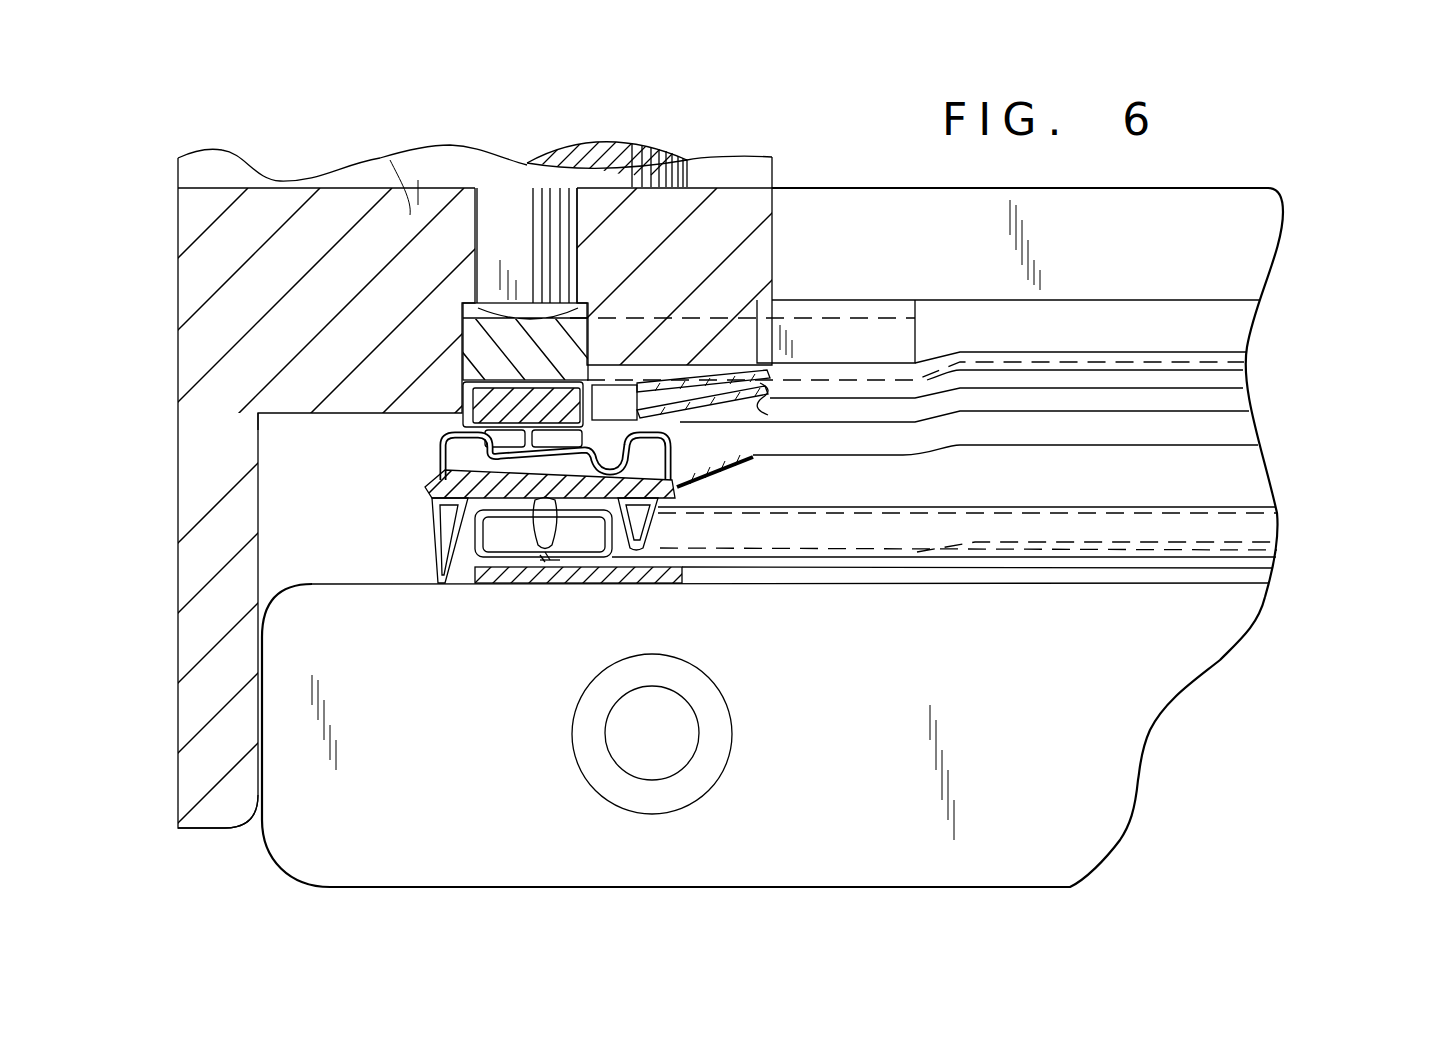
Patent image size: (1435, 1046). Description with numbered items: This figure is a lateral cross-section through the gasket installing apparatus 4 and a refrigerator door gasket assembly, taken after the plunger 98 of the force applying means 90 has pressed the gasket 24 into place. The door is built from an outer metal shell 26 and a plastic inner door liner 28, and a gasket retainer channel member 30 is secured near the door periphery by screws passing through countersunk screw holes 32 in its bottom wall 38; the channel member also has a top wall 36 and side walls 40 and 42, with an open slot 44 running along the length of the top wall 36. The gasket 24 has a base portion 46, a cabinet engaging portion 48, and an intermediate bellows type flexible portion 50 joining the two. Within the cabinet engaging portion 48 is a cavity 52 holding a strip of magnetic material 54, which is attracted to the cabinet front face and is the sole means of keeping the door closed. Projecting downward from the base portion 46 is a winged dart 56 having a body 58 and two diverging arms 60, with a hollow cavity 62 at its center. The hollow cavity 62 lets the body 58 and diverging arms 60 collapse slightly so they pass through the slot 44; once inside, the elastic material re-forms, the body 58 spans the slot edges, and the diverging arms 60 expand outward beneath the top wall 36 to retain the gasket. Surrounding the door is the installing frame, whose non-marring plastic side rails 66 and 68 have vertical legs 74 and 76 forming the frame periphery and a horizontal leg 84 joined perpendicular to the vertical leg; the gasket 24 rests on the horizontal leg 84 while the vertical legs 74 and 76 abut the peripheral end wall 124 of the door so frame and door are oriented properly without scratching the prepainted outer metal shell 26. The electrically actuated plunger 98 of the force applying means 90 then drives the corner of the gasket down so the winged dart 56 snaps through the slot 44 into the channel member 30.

The connector assembly 4 is at (135, 236).
The gasket 24 is at (716, 492).
The outer metal shell 26 is at (312, 866).
The inner door or liner 28 is at (693, 572).
The gasket retainer channel member 30 is at (605, 572).
The screw holes 32 is at (545, 598).
The top wall 36 is at (672, 572).
The bottom wall 38 is at (540, 562).
The side wall 40 is at (620, 565).
The side wall 42 is at (490, 540).
The open slot 44 is at (530, 507).
The base portion 46 is at (680, 525).
The cabinet engaging portion 48 is at (455, 397).
The bellows type flexible portion 50 is at (690, 442).
The cavity 52 is at (478, 430).
The strip of magnetic material 54 is at (582, 406).
The winged dart 56 is at (572, 580).
The body 58 is at (438, 483).
The diverging arms 60 is at (545, 568).
The hollow cavity 62 is at (500, 575).
The side rail 66 is at (1208, 178).
The side rail 68 is at (168, 528).
The vertical leg 74 is at (1220, 330).
The vertical leg 76 is at (275, 592).
The horizontal leg 84 is at (445, 403).
The force applying means 90 is at (652, 150).
The plunger 98 is at (523, 220).
The peripheral end wall 124 is at (258, 808).